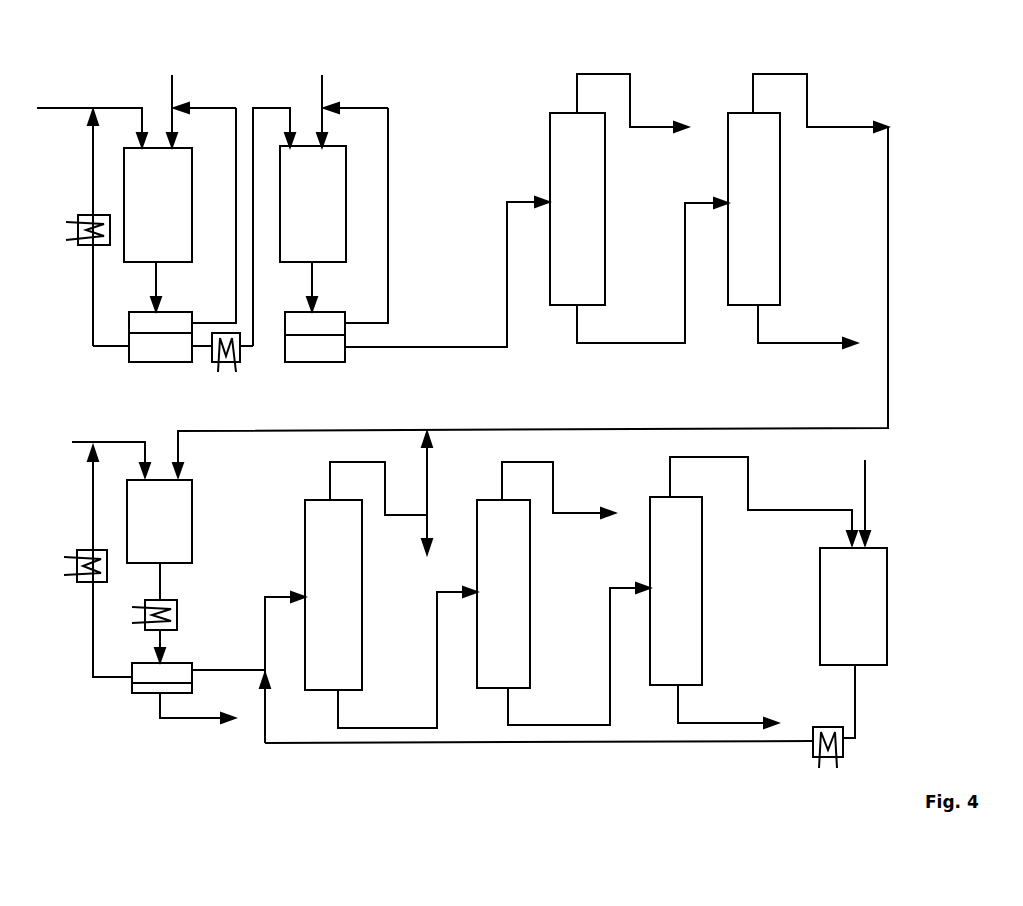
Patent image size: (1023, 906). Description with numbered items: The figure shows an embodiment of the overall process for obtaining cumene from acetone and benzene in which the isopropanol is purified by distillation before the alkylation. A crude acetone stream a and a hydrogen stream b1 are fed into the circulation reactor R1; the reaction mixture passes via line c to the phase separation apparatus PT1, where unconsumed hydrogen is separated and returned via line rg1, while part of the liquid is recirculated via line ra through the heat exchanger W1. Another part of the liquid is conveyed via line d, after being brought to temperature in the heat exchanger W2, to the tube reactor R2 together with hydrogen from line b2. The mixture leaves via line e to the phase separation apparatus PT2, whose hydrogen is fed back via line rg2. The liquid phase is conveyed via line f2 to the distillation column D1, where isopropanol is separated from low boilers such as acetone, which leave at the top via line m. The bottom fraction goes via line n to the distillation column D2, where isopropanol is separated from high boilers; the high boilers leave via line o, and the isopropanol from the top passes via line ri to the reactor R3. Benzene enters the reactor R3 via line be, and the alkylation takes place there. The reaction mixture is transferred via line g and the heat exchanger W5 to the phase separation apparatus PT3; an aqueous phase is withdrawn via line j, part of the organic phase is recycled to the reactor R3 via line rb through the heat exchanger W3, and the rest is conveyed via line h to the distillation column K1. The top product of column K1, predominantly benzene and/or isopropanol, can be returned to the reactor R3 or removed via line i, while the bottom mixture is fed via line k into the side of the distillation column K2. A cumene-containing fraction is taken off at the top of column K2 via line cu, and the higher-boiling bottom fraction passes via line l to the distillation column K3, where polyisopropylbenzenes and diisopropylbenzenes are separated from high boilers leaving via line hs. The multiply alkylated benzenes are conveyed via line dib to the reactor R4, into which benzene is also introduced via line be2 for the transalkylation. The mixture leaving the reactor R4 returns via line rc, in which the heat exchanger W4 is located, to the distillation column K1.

The crude acetone stream a is at (92, 127).
The line ra is at (98, 228).
The heat exchanger W1 is at (77, 242).
The circulation reactor R1 is at (158, 205).
The hydrogen stream b1 is at (185, 111).
The line rg1 is at (205, 213).
The line c is at (161, 286).
The phase separation apparatus PT1 is at (160, 337).
The heat exchanger W2 is at (222, 371).
The line d is at (274, 227).
The tube reactor R2 is at (313, 204).
The line b2 is at (335, 111).
The line rg2 is at (356, 213).
The line e is at (318, 286).
The phase separation apparatus PT2 is at (315, 337).
The line f2 is at (447, 272).
The distillation column D1 is at (577, 209).
The line m is at (632, 118).
The line n is at (652, 270).
The distillation column D2 is at (754, 209).
The line ri is at (530, 275).
The line o is at (807, 326).
The line be is at (108, 445).
The line rb is at (96, 561).
The heat exchanger W3 is at (73, 578).
The reactor R3 is at (159, 521).
The line g is at (170, 581).
The heat exchanger W5 is at (170, 631).
The phase separation apparatus PT3 is at (162, 678).
The line h is at (248, 667).
The line j is at (197, 719).
The distillation column K1 is at (333, 595).
The line i is at (381, 494).
The line k is at (407, 657).
The distillation column K2 is at (503, 594).
The line cu is at (559, 504).
The line l is at (579, 654).
The distillation column K3 is at (676, 591).
The line dib is at (763, 501).
The line be2 is at (883, 502).
The reactor R4 is at (853, 606).
The line hs is at (728, 706).
The line rc is at (859, 701).
The heat exchanger W4 is at (554, 765).